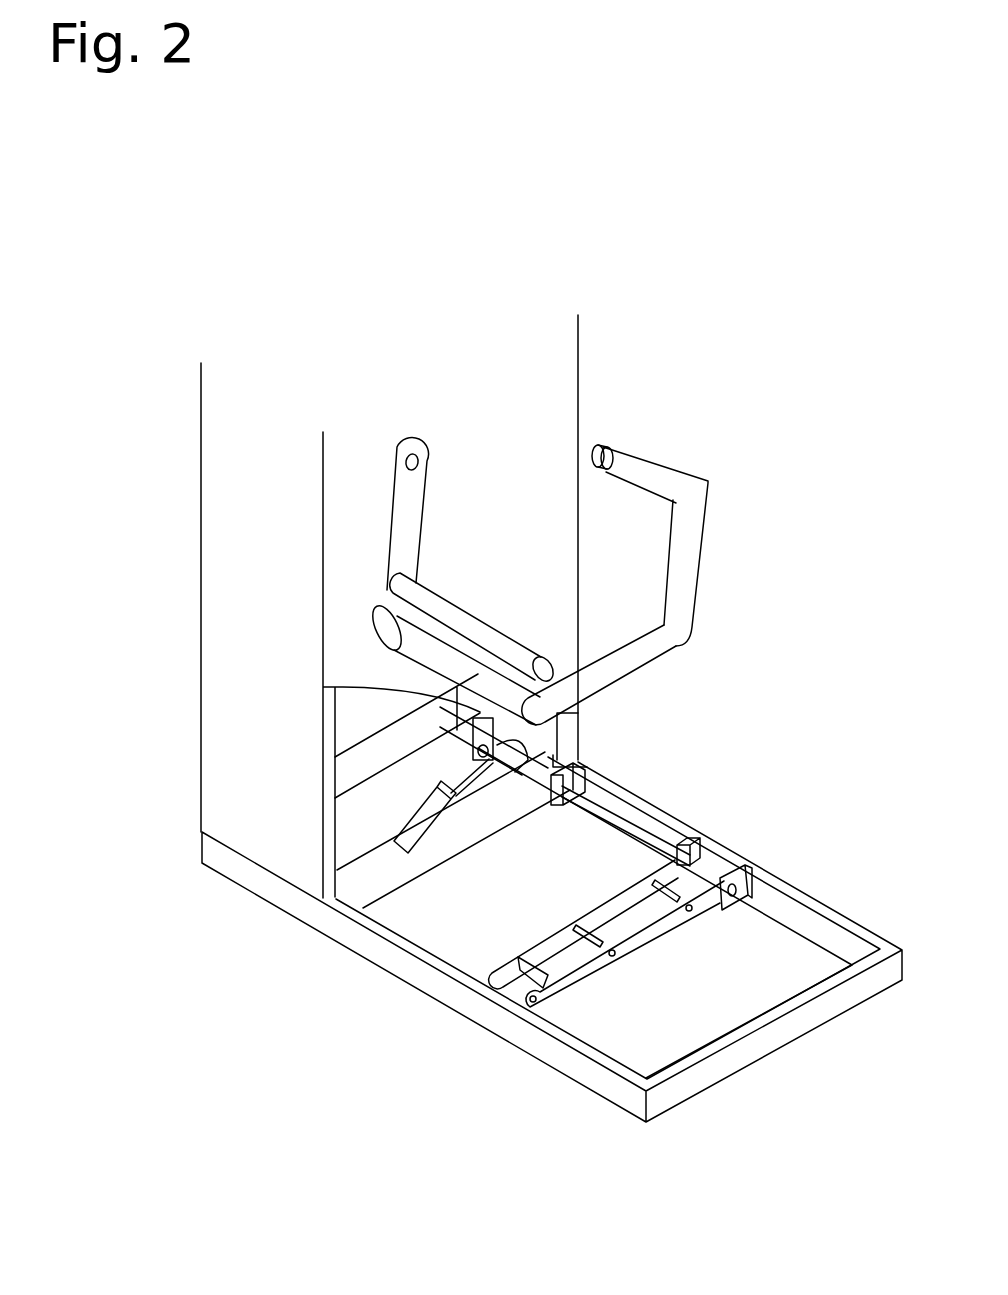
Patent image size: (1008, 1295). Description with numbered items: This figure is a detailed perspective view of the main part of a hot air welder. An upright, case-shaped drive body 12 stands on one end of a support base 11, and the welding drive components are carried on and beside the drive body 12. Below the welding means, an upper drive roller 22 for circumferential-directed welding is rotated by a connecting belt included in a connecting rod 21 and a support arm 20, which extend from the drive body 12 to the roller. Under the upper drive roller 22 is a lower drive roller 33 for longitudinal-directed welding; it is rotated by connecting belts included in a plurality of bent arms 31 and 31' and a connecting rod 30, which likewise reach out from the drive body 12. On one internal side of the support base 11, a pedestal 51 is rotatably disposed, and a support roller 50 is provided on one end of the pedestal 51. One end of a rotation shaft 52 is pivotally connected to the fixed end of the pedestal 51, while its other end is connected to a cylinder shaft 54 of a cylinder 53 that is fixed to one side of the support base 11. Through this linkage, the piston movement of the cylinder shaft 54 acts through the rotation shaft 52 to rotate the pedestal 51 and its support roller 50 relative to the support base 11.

The support base 11 is at (608, 1090).
The drive body 12 is at (244, 598).
The support arm 20 is at (410, 493).
The connecting rod 21 is at (472, 612).
The upper drive roller 22 is at (537, 657).
The connecting rod 30 is at (437, 655).
The bent arm 31 is at (647, 675).
The bent arm 31' is at (718, 546).
The lower drive roller 33 is at (603, 445).
The support roller 50 is at (517, 988).
The pedestal 51 is at (645, 935).
The rotation shaft 52 is at (655, 835).
The cylinder 53 is at (390, 842).
The cylinder shaft 54 is at (463, 772).